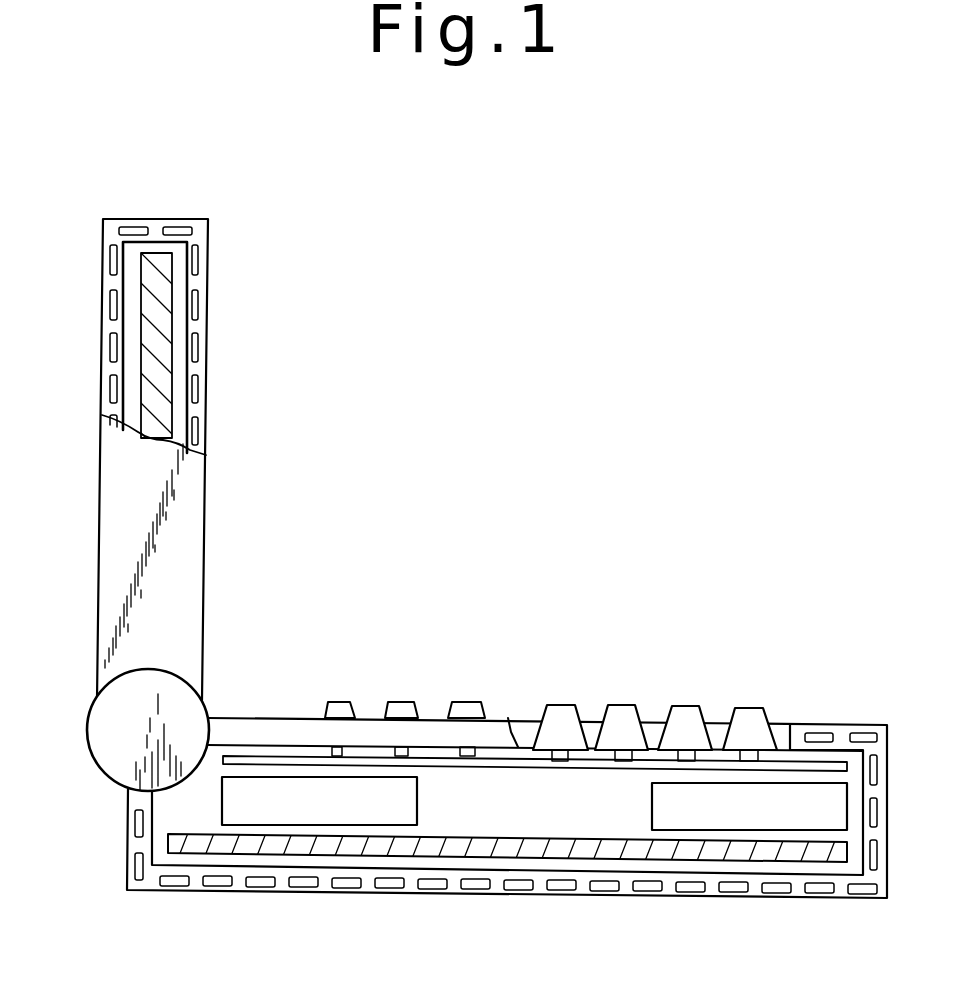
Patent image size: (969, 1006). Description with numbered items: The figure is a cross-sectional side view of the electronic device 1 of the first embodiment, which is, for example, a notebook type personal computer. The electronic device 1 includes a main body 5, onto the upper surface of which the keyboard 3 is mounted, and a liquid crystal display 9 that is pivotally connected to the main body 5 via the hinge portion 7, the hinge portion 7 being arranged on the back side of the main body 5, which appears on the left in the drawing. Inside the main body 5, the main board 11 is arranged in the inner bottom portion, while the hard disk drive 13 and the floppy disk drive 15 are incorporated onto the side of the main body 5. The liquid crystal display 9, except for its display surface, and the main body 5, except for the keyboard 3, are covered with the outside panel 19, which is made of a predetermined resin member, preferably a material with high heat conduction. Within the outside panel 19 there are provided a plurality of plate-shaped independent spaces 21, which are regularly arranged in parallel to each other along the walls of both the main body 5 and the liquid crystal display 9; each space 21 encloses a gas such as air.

The electronic device 1 is at (561, 368).
The keyboard 3 is at (695, 690).
The main body 5 is at (496, 570).
The hinge portion 7 is at (107, 752).
The liquid crystal display 9 is at (338, 403).
The main board 11 is at (520, 850).
The hard disk drive 13 is at (250, 795).
The floppy disk drive 15 is at (808, 797).
The outside panel 19 is at (140, 219).
The plate-shaped independent spaces 21 is at (197, 253).